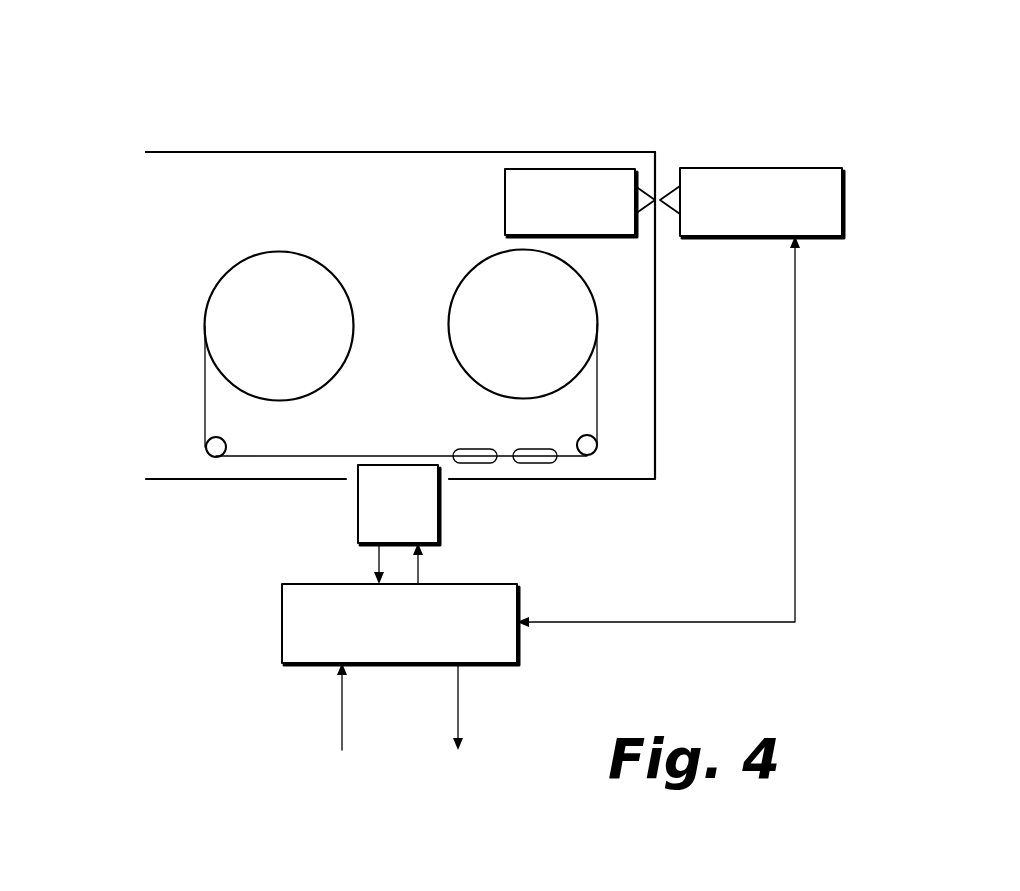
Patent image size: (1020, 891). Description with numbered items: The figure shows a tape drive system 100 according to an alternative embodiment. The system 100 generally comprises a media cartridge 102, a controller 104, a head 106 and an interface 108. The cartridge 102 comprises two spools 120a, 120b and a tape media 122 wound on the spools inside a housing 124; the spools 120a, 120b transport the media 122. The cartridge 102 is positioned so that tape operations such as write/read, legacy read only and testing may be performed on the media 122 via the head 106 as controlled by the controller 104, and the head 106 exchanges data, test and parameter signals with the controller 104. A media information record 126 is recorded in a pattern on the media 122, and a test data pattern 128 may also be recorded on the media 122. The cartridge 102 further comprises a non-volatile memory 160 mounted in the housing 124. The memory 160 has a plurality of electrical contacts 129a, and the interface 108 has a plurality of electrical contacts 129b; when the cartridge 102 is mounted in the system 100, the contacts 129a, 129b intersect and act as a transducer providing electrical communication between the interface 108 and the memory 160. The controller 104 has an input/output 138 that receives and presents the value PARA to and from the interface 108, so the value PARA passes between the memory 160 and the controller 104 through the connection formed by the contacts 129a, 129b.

The tape drive system 100 is at (203, 117).
The media cartridge 102 is at (134, 316).
The controller 104 is at (282, 617).
The head 106 is at (357, 505).
The interface 108 is at (802, 168).
The spool 120a is at (352, 302).
The spool 120b is at (470, 378).
The media 122 is at (288, 456).
The housing 124 is at (282, 152).
The media information record 126 is at (473, 463).
The test data pattern 128 is at (534, 463).
The electrical contacts 129a is at (647, 217).
The electrical contacts 129b is at (668, 215).
The input/output 138 is at (520, 618).
The non-volatile memory 160 is at (505, 200).